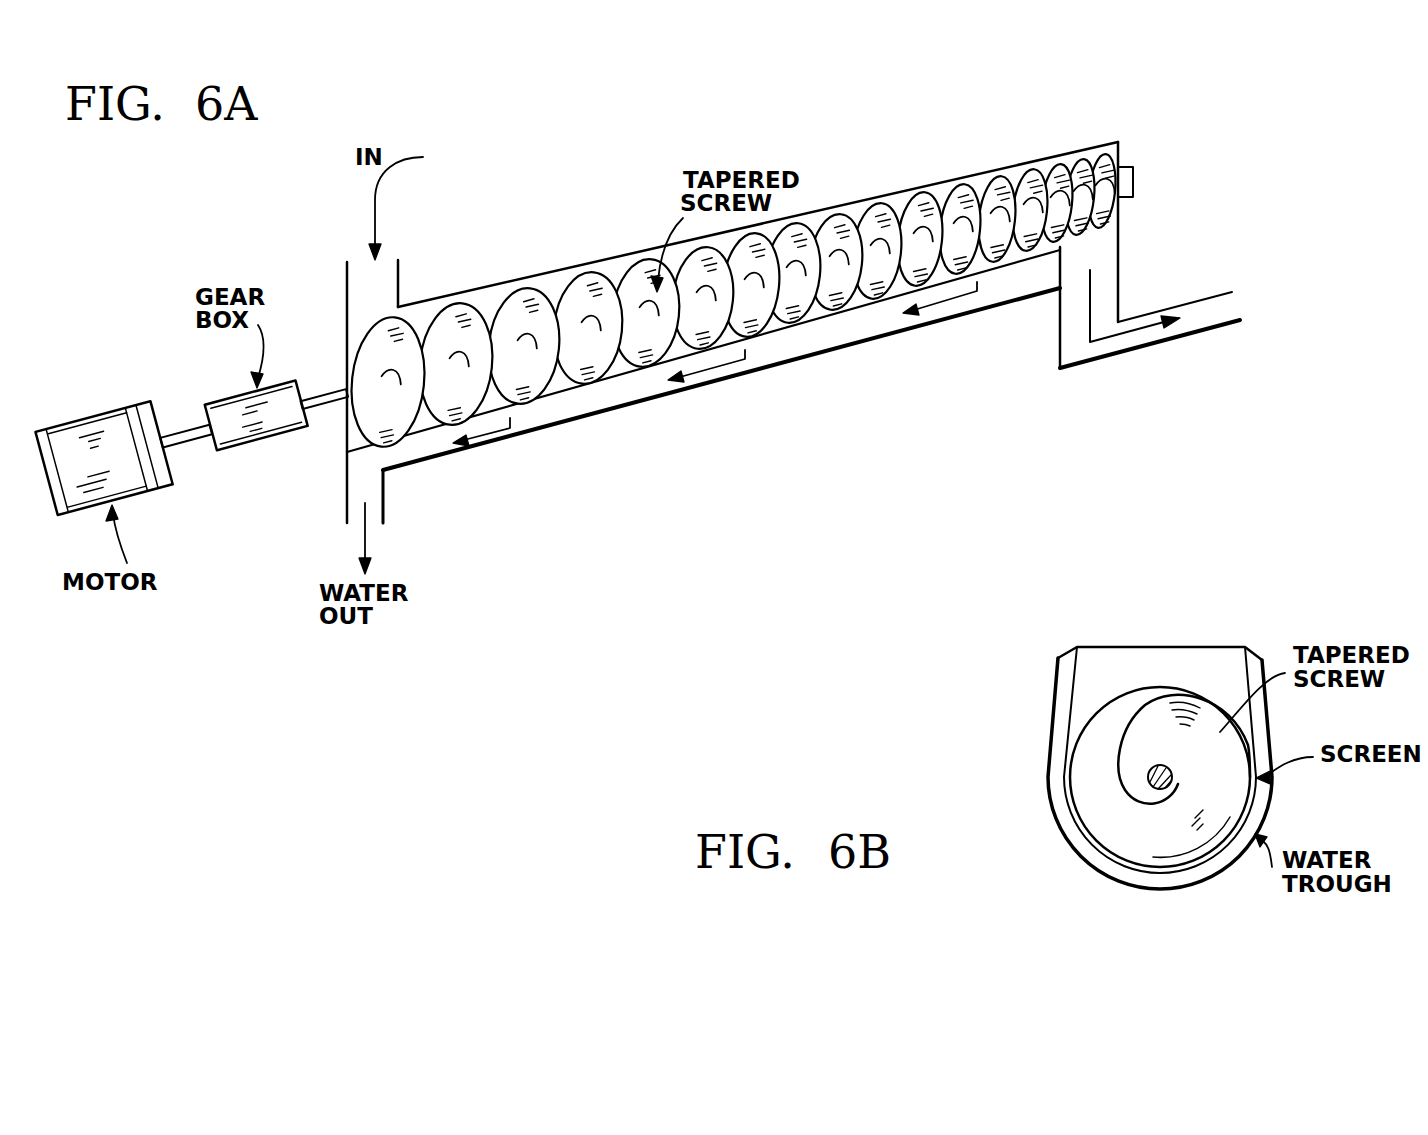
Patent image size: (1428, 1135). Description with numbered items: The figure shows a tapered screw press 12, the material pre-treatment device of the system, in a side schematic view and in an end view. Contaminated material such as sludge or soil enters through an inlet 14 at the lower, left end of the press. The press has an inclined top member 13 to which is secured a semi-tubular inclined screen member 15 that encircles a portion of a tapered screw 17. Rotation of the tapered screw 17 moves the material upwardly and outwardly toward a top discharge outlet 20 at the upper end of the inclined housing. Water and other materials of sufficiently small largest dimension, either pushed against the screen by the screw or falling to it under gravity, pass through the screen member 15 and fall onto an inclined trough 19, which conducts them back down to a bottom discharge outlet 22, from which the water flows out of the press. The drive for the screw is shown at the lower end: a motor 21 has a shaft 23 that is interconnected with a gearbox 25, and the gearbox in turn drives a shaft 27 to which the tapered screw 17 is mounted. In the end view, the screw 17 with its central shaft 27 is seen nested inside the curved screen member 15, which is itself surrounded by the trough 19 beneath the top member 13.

In FIG. 6A, the tapered screw press 12 is at (765, 213).
In FIG. 6A, the inclined top member 13 is at (620, 258).
In FIG. 6B, the inclined top member 13 is at (1190, 645).
In FIG. 6A, the inlet 14 is at (398, 283).
In FIG. 6A, the semi-tubular inclined screen member 15 is at (868, 307).
In FIG. 6B, the semi-tubular inclined screen member 15 is at (1078, 833).
In FIG. 6A, the tapered screw 17 is at (627, 373).
In FIG. 6B, the tapered screw 17 is at (1087, 732).
In FIG. 6A, the inclined trough 19 is at (703, 392).
In FIG. 6B, the inclined trough 19 is at (1107, 877).
In FIG. 6A, the top discharge outlet 20 is at (1120, 300).
In FIG. 6A, the motor 21 is at (173, 480).
In FIG. 6A, the bottom discharge outlet 22 is at (388, 495).
In FIG. 6A, the shaft 23 is at (180, 423).
In FIG. 6A, the gearbox 25 is at (245, 445).
In FIG. 6A, the shaft 27 is at (323, 390).
In FIG. 6B, the shaft 27 is at (1148, 777).